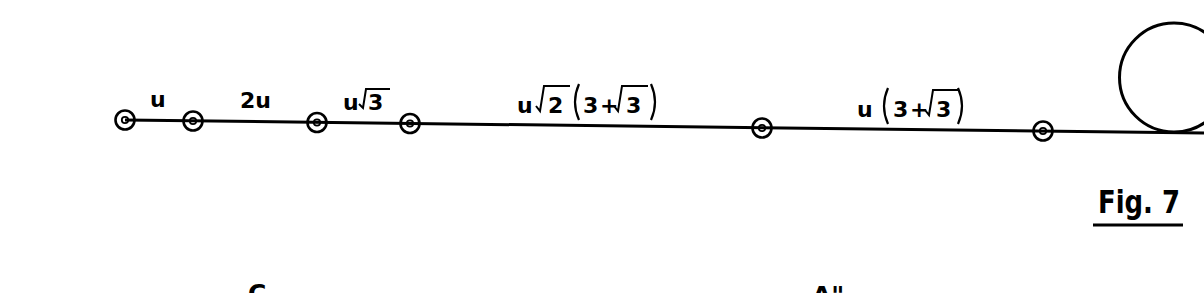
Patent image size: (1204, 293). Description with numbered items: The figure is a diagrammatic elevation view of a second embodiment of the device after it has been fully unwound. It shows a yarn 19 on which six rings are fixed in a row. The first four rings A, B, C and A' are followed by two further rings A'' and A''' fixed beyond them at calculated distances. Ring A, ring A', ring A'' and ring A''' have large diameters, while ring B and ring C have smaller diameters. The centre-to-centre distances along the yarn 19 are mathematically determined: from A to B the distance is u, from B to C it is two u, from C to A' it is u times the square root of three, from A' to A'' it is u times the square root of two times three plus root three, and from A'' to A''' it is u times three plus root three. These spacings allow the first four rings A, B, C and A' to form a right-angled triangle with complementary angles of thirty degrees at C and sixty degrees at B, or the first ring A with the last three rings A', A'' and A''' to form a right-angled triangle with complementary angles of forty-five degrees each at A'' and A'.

The yarn 19 is at (482, 127).
The first ring A is at (125, 139).
The ring B is at (194, 139).
The ring C is at (316, 141).
The ring A' is at (412, 141).
The ring A'' is at (766, 145).
The ring A''' is at (1047, 149).